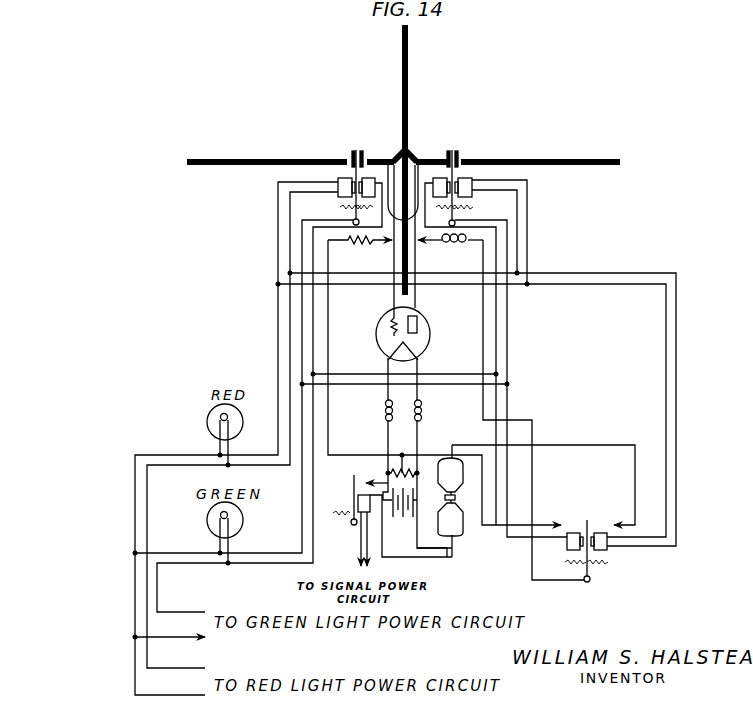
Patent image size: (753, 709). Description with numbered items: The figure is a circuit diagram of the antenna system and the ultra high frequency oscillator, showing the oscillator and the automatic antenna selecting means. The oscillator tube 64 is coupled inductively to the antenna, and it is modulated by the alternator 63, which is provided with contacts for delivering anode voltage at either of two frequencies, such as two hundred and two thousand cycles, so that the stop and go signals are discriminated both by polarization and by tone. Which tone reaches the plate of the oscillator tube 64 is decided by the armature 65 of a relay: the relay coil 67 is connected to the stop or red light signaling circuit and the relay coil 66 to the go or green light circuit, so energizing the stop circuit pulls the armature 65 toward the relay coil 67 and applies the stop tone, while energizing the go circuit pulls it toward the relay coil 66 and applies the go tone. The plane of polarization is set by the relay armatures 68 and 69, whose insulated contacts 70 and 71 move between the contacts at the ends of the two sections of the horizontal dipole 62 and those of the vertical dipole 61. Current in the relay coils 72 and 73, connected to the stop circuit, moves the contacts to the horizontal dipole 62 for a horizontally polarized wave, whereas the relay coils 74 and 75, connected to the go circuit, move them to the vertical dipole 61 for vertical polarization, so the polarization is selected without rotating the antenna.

The vertical dipole 61 is at (410, 76).
The horizontal dipole 62 is at (378, 136).
The alternator 63 is at (463, 472).
The oscillator tube 64 is at (428, 322).
The armature 65 is at (588, 520).
The relay coil 66 is at (568, 548).
The relay coil 67 is at (607, 548).
The relay armature 68 is at (490, 157).
The relay armature 69 is at (338, 180).
The insulated contact 70 is at (456, 172).
The insulated contact 71 is at (352, 158).
The relay coil 72 is at (473, 180).
The relay coil 73 is at (288, 160).
The relay coil 74 is at (442, 178).
The relay coil 75 is at (366, 176).